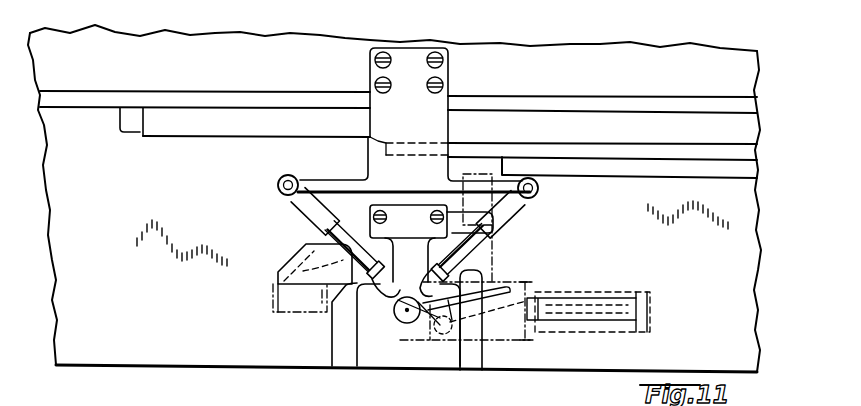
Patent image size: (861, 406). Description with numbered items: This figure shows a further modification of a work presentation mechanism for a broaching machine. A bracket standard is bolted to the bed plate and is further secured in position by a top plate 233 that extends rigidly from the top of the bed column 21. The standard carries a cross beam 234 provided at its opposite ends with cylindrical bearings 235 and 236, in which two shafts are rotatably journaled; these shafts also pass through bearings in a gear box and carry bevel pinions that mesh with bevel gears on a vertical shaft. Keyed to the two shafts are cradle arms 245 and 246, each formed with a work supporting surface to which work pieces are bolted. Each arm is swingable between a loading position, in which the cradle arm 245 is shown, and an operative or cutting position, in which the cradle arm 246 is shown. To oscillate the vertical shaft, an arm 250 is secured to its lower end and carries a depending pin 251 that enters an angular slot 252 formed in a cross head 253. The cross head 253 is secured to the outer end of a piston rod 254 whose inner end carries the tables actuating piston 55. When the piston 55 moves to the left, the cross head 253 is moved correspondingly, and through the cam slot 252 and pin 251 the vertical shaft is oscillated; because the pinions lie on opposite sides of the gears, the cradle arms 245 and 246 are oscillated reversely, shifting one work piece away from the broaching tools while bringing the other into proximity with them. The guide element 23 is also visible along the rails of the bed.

The bed column 21 is at (748, 205).
The guide rail 23 is at (166, 126).
The top plate 233 is at (433, 100).
The cross beam 234 is at (346, 344).
The cylindrical bearing 235 is at (298, 176).
The cylindrical bearing 236 is at (540, 193).
The cradle arm 245 is at (322, 238).
The cradle arm 246 is at (494, 258).
The arm 250 is at (413, 334).
The pin 251 is at (452, 337).
The angular slot 252 is at (500, 282).
The cross head 253 is at (515, 332).
The piston rod 254 is at (573, 300).
The tables actuating piston 55 is at (622, 305).